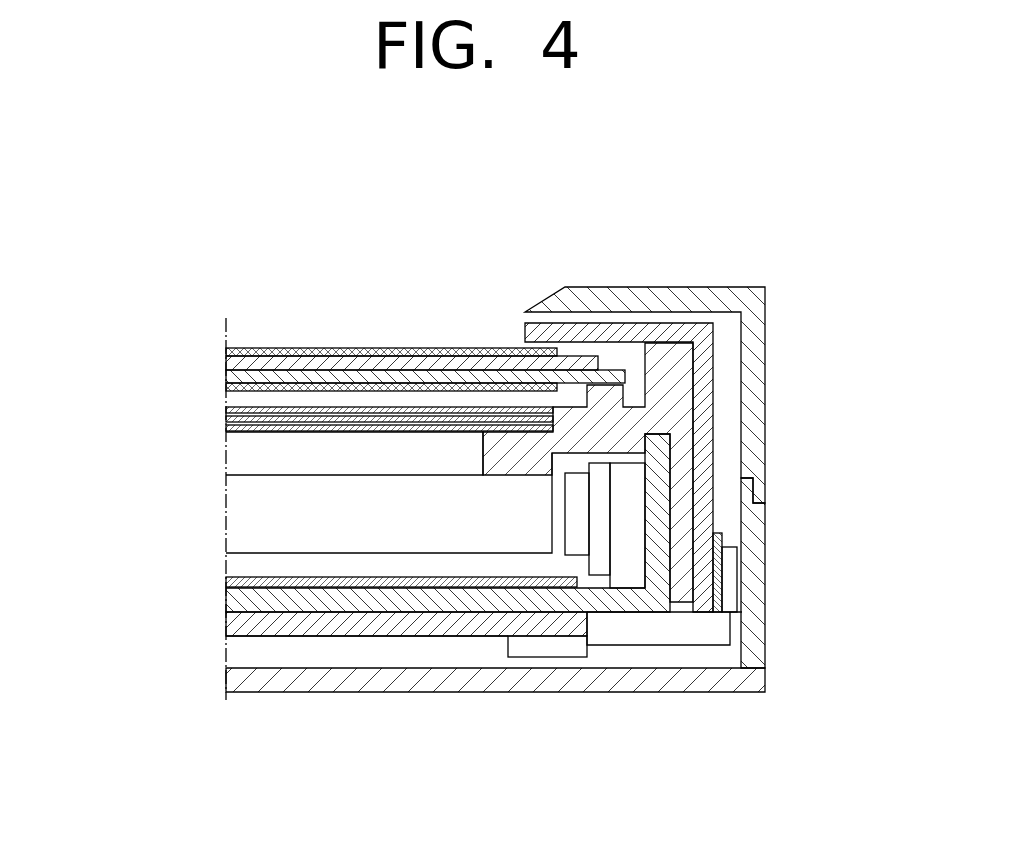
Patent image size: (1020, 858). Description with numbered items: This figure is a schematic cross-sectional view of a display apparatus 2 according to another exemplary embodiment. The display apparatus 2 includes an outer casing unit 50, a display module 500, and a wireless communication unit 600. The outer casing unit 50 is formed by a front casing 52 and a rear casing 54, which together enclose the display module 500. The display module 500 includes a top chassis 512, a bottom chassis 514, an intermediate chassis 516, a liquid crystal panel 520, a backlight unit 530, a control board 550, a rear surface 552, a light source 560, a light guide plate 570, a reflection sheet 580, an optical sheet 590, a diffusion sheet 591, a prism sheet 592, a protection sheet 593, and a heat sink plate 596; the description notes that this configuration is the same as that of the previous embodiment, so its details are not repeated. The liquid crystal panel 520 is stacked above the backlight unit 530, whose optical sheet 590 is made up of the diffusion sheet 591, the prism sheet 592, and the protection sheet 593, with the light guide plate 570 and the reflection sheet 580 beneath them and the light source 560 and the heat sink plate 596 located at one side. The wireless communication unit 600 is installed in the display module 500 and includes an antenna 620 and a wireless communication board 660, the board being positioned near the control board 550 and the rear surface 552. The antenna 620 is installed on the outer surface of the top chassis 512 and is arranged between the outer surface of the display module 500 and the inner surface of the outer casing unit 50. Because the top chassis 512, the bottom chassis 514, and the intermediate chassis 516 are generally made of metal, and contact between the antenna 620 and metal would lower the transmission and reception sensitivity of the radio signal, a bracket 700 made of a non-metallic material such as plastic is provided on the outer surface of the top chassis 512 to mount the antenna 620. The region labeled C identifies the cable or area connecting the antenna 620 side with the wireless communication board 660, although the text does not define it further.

The display apparatus 2 is at (460, 478).
The outer casing unit 50 is at (551, 489).
The front casing 52 is at (678, 395).
The rear casing 54 is at (529, 585).
The display module 500 is at (344, 414).
The top chassis 512 is at (603, 422).
The bottom chassis 514 is at (448, 593).
The intermediate chassis 516 is at (589, 417).
The liquid crystal panel 520 is at (378, 369).
The backlight unit 530 is at (344, 414).
The control board 550 is at (406, 682).
The rear surface 552 is at (367, 694).
The light source 560 is at (381, 519).
The light guide plate 570 is at (352, 503).
The reflection sheet 580 is at (364, 580).
The optical sheet 590 is at (330, 420).
The diffusion sheet 591 is at (364, 443).
The prism sheet 592 is at (364, 420).
The protection sheet 593 is at (364, 396).
The heat sink plate 596 is at (616, 410).
The wireless communication unit 600 is at (625, 679).
The antenna 620 is at (723, 649).
The wireless communication board 660 is at (547, 694).
The bracket 700 is at (780, 572).
The cable C is at (664, 682).